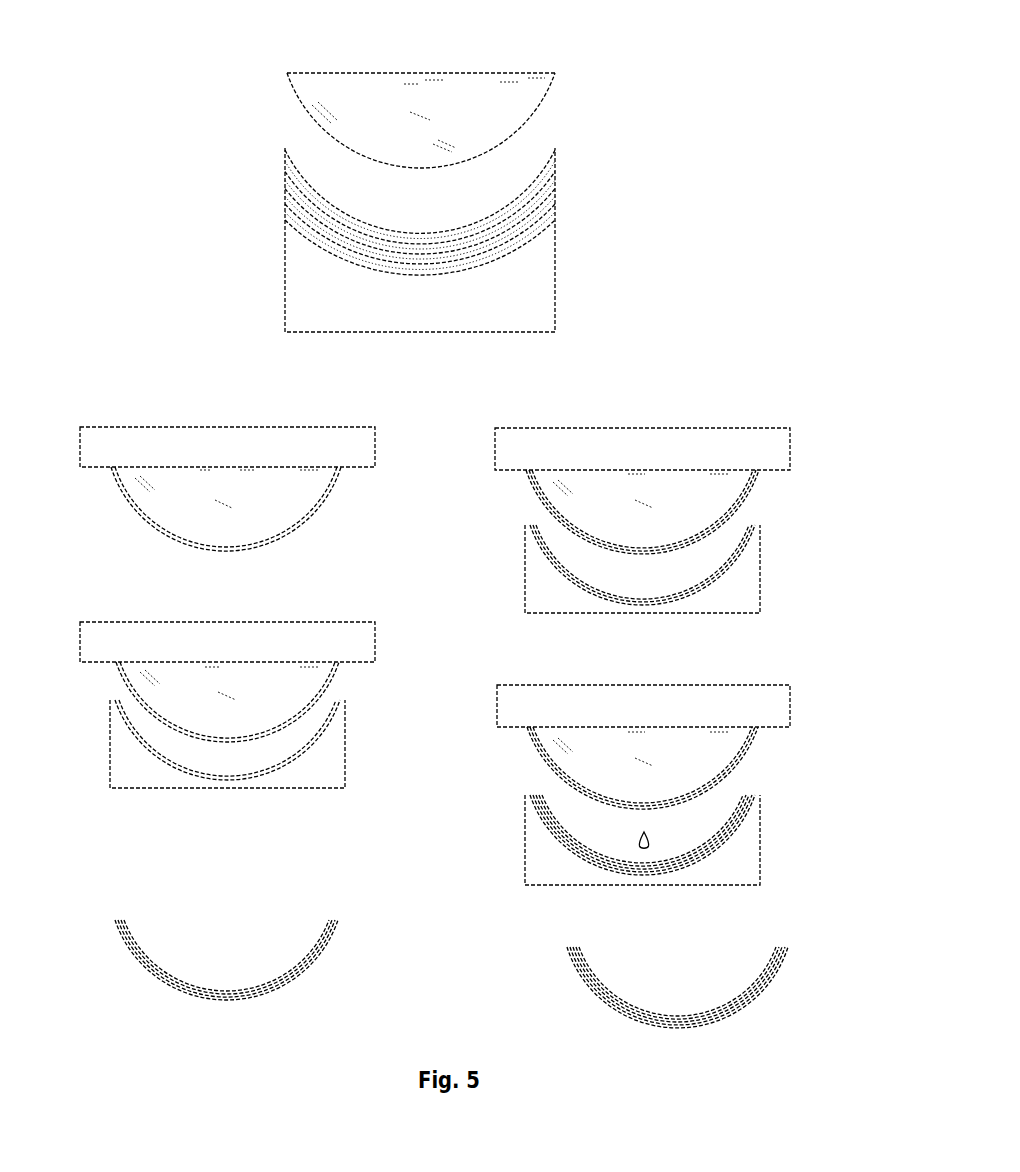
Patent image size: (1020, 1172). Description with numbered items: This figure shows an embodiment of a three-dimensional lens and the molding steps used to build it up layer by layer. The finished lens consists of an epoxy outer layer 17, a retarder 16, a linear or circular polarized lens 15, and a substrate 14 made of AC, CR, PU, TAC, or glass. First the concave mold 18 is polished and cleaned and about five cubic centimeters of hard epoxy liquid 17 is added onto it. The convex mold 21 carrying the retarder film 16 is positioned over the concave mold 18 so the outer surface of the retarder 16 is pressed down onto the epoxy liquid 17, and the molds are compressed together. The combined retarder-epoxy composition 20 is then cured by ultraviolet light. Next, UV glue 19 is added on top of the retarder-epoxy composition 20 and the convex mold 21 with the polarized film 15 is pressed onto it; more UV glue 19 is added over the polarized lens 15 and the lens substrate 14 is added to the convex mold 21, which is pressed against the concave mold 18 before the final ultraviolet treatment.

The substrate 14 is at (556, 162).
The linear or circular polarized lens 15 is at (556, 186).
The retarder 16 is at (556, 210).
The epoxy outer layer 17 is at (556, 240).
The concave mold 18 is at (540, 300).
The UV glue 19 is at (795, 800).
The retarder-epoxy composition 20 is at (470, 974).
The convex mold 21 is at (428, 100).